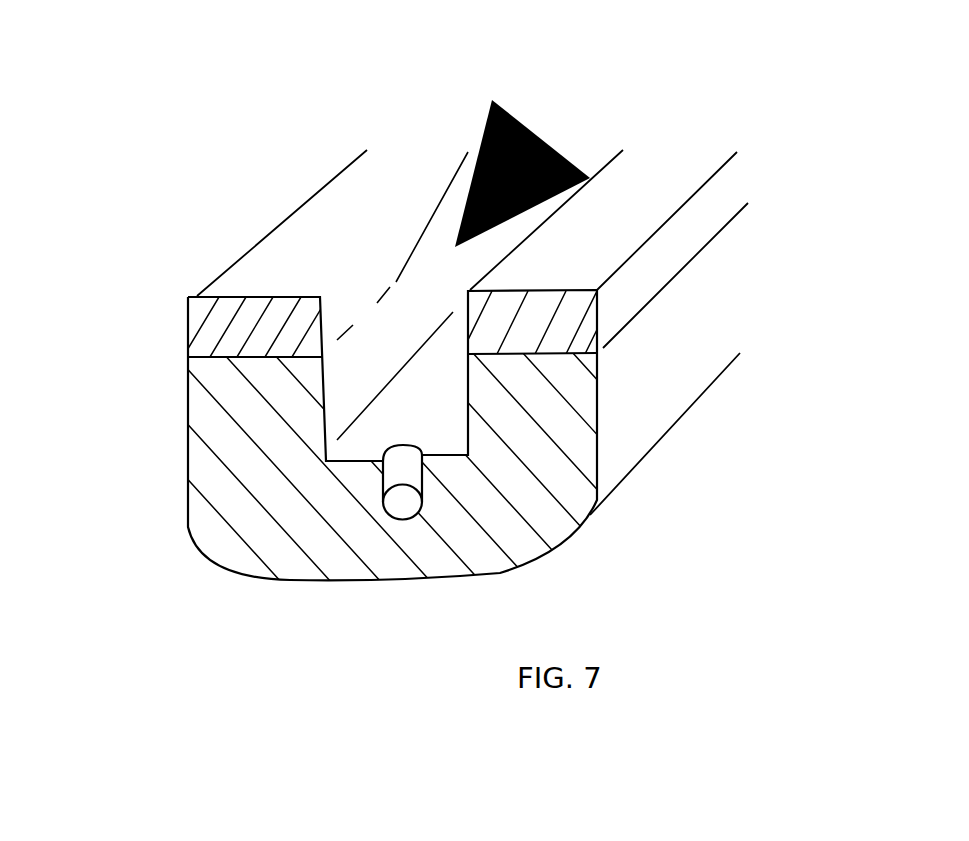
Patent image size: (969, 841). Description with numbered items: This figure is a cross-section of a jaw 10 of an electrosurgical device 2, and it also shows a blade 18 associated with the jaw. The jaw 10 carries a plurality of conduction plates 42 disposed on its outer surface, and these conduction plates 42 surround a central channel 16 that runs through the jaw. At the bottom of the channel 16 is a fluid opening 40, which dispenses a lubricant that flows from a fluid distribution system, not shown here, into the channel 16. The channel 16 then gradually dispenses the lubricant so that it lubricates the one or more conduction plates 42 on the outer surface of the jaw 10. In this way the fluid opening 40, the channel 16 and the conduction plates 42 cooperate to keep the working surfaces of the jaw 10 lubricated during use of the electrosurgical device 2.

The electrosurgical device 2 is at (130, 161).
The jaw 10 is at (770, 130).
The central channel 16 is at (379, 286).
The blade 18 is at (547, 203).
The fluid opening 40 is at (398, 505).
The conduction plates 42 is at (192, 320).